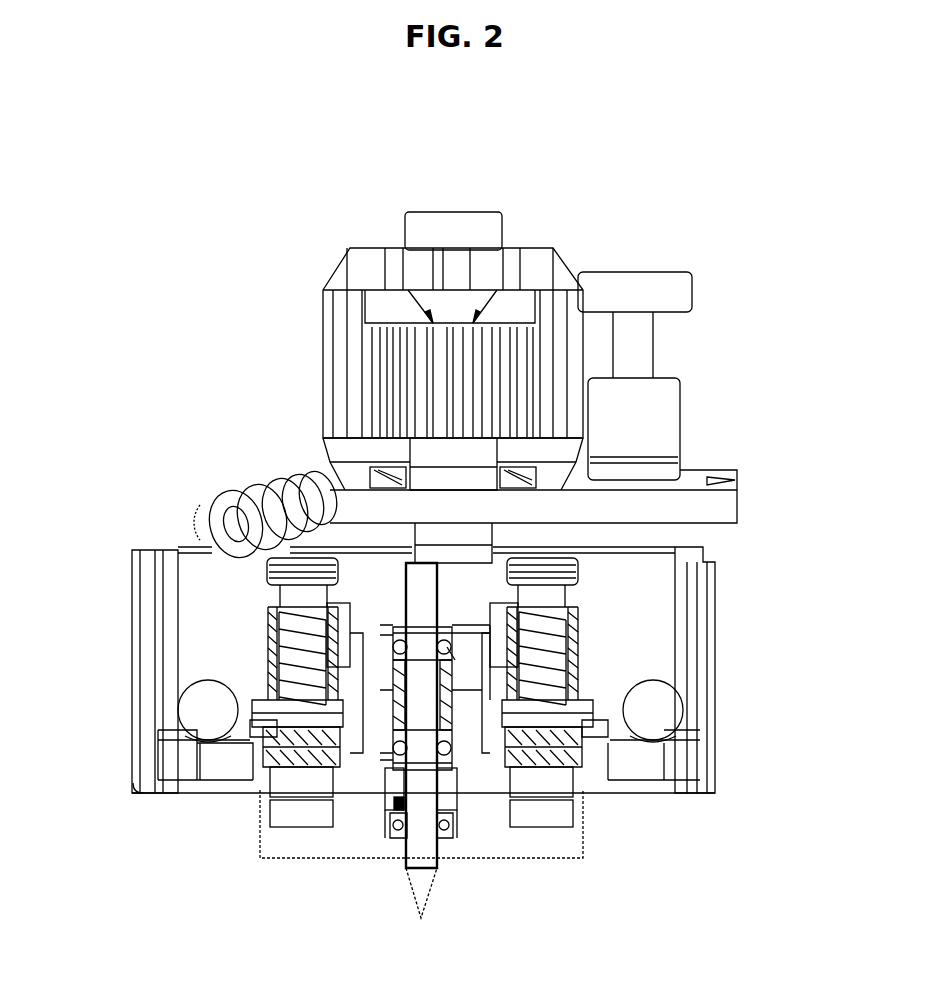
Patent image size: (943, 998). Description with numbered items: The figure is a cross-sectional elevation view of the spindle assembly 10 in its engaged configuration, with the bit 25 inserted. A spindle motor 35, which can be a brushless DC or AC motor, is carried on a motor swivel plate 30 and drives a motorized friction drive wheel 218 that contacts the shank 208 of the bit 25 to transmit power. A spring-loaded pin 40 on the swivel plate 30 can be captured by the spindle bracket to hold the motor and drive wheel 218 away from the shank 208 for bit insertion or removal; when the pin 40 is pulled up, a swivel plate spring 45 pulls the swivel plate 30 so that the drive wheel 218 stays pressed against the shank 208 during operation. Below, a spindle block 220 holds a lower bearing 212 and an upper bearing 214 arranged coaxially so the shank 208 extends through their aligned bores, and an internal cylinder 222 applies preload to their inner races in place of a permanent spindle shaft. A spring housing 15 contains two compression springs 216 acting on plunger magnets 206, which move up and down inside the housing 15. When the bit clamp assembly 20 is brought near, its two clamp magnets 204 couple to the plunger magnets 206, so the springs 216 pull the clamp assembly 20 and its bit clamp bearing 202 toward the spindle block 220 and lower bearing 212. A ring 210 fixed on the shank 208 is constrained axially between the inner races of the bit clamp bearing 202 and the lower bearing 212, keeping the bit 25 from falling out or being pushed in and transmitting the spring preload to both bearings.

The spindle assembly 10 is at (452, 163).
The spindle motor 35 is at (326, 314).
The spring-loaded pin 40 is at (675, 288).
The motor swivel plate 30 is at (737, 500).
The swivel plate spring 45 is at (223, 497).
The spring housing 15 is at (712, 630).
The motorized friction drive wheel 218 is at (490, 567).
The compression springs 216 is at (285, 640).
The internal cylinder 222 is at (285, 698).
The spindle block 220 is at (275, 745).
The plunger magnets 206 is at (270, 792).
The clamp magnets 204 is at (280, 812).
The bit clamp assembly 20 is at (267, 848).
The bit clamp bearing 202 is at (443, 828).
The lower bearing 212 is at (443, 745).
The upper bearing 214 is at (447, 647).
The shank 208 is at (410, 860).
The ring 210 is at (397, 793).
The bit 25 is at (418, 908).